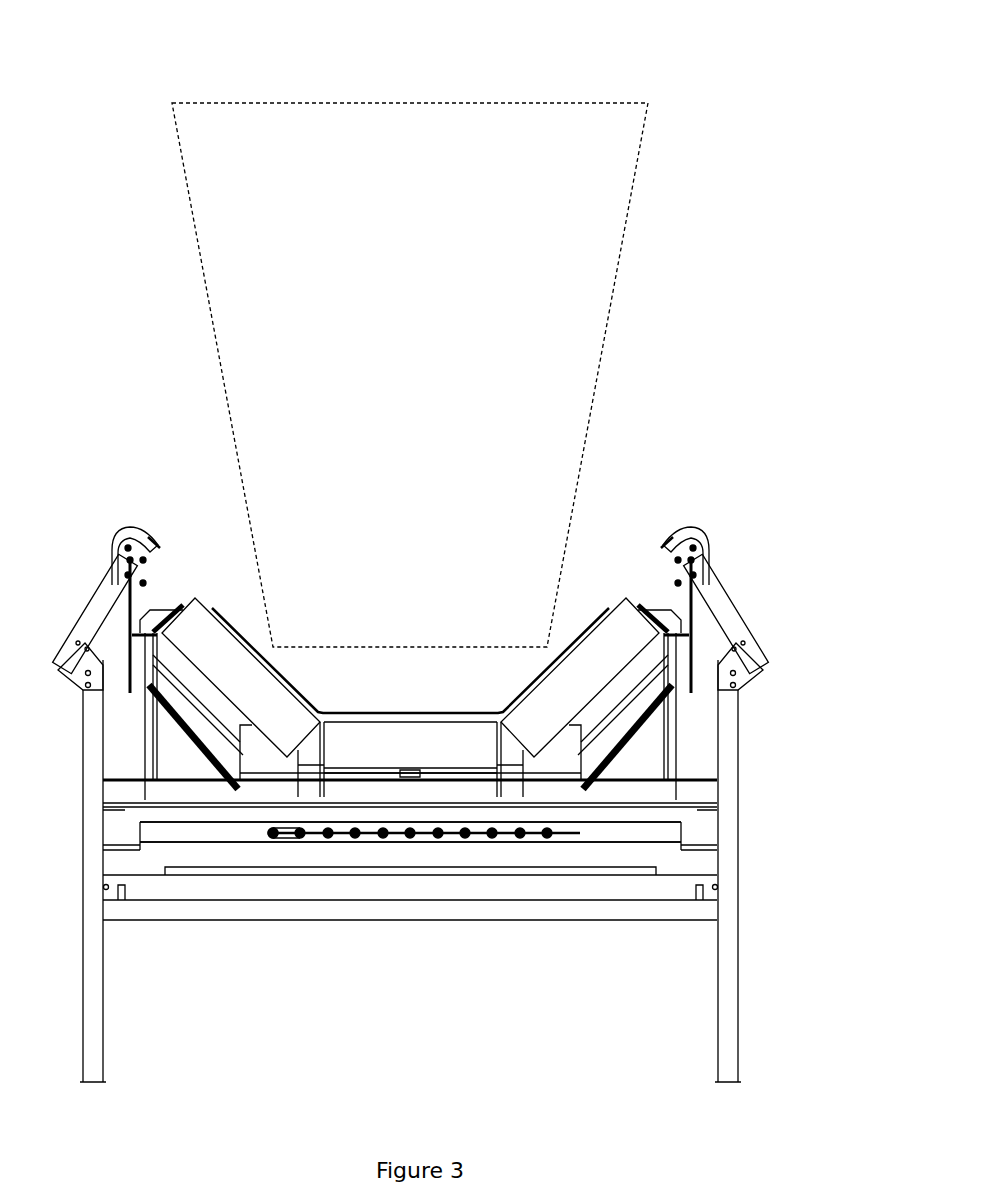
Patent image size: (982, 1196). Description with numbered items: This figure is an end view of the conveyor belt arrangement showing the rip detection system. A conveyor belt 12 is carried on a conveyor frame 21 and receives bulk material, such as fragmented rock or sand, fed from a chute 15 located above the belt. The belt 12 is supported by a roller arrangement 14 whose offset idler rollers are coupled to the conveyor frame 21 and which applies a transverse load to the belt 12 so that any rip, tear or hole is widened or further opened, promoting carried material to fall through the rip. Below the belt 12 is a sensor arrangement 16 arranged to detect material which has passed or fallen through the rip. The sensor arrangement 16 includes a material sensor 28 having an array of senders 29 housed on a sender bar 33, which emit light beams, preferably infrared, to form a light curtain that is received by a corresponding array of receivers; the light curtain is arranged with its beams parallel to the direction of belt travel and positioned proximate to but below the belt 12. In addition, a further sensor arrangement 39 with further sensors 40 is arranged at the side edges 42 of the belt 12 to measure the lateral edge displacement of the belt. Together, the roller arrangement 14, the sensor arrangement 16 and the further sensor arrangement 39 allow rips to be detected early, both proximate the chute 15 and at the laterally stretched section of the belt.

The conveyor belt 12 is at (348, 710).
The roller arrangement 14 is at (663, 612).
The chute 15 is at (358, 125).
The sensor arrangement 16 is at (397, 842).
The conveyor frame 21 is at (732, 873).
The material sensor 28 is at (480, 842).
The array of senders 29 is at (273, 842).
The sender bar 33 is at (240, 940).
The further sensor arrangement 39 is at (150, 538).
The further sensors 40 is at (149, 535).
The side edges 42 is at (213, 605).